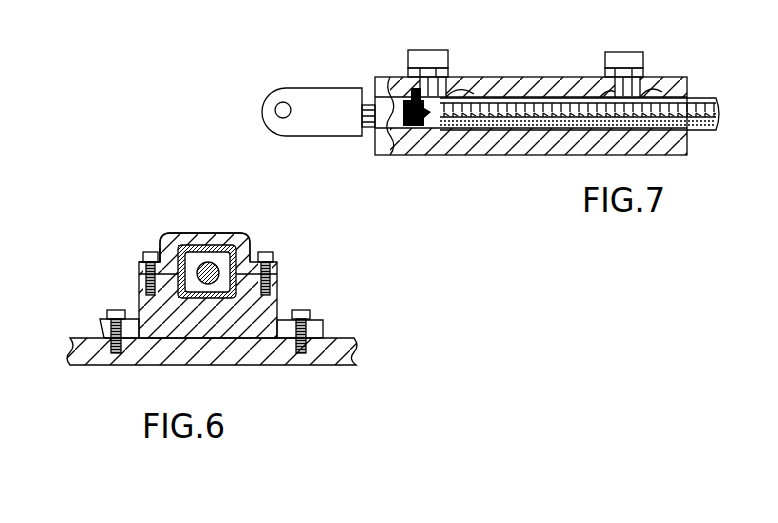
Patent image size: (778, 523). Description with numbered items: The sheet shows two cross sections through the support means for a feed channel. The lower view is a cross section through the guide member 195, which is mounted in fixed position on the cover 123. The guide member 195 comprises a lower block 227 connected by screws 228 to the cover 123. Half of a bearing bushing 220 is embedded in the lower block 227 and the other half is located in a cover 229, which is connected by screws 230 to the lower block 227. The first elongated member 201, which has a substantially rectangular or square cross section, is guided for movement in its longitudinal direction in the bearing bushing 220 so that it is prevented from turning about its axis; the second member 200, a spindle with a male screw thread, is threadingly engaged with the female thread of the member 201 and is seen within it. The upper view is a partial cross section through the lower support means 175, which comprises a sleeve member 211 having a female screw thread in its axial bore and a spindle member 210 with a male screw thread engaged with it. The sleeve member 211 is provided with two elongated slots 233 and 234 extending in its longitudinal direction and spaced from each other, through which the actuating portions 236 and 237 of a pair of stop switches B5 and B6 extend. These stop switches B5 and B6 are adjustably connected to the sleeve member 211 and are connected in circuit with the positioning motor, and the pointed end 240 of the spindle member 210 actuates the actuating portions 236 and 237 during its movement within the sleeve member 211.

In FIG. 6, the cover 123 is at (259, 374).
In FIG. 7, the lower support means 175 is at (270, 80).
In FIG. 6, the guide member 195 is at (247, 223).
In FIG. 6, the second member 200 is at (212, 262).
In FIG. 6, the first elongated member 201 is at (253, 252).
In FIG. 7, the spindle member 210 is at (703, 98).
In FIG. 7, the sleeve member 211 is at (443, 155).
In FIG. 6, the bearing bushing 220 is at (192, 234).
In FIG. 6, the lower block 227 is at (278, 306).
In FIG. 6, the screws 228 is at (105, 311).
In FIG. 6, the cover 229 is at (166, 243).
In FIG. 6, the screws 230 is at (148, 254).
In FIG. 7, the elongated slot 233 is at (456, 92).
In FIG. 7, the elongated slot 234 is at (643, 92).
In FIG. 7, the actuating portion 236 is at (415, 88).
In FIG. 7, the actuating portion 237 is at (610, 80).
In FIG. 7, the pointed end 240 is at (420, 128).
In FIG. 7, the stop switch B5 is at (423, 50).
In FIG. 7, the stop switch B6 is at (622, 52).